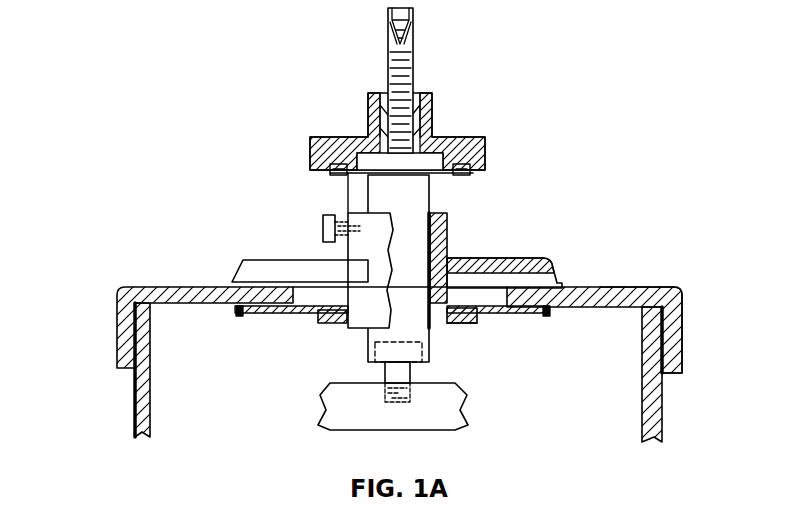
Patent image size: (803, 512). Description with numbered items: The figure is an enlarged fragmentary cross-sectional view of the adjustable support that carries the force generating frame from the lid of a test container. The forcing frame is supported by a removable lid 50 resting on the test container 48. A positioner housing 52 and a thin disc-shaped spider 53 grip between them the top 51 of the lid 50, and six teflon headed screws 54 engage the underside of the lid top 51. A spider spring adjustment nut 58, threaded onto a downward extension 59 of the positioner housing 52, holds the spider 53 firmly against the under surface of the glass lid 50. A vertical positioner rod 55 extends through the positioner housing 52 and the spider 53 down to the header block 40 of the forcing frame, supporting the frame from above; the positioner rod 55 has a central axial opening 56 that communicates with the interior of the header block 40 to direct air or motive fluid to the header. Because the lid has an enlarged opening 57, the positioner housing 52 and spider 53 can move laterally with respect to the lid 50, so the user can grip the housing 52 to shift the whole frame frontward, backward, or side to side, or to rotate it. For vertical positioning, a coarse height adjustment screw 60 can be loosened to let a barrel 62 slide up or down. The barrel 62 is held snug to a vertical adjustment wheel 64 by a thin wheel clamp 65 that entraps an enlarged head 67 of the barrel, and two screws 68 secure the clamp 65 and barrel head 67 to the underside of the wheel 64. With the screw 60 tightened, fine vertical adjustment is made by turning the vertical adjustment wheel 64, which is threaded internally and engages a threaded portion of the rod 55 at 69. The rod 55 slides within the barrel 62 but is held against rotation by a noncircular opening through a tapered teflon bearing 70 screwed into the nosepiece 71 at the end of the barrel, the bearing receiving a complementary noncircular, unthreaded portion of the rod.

The header block 40 is at (452, 408).
The test container 48 is at (130, 410).
The removable lid 50 is at (110, 330).
The top of the lid 51 is at (648, 290).
The positioner housing 52 is at (250, 265).
The spider 53 is at (273, 312).
The teflon headed screws 54 is at (238, 315).
The positioner rod 55 is at (410, 82).
The central axial opening 56 is at (402, 40).
The enlarged opening 57 is at (485, 292).
The spider spring adjustment nut 58 is at (477, 319).
The downward extension 59 is at (447, 325).
The coarse height adjustment screw 60 is at (323, 228).
The barrel 62 is at (423, 192).
The vertical adjustment wheel 64 is at (340, 147).
The wheel clamp 65 is at (347, 196).
The enlarged head 67 is at (433, 157).
The screws 68 is at (335, 176).
The threaded portion 69 is at (385, 143).
The tapered teflon bearing 70 is at (375, 352).
The nosepiece 71 is at (428, 364).